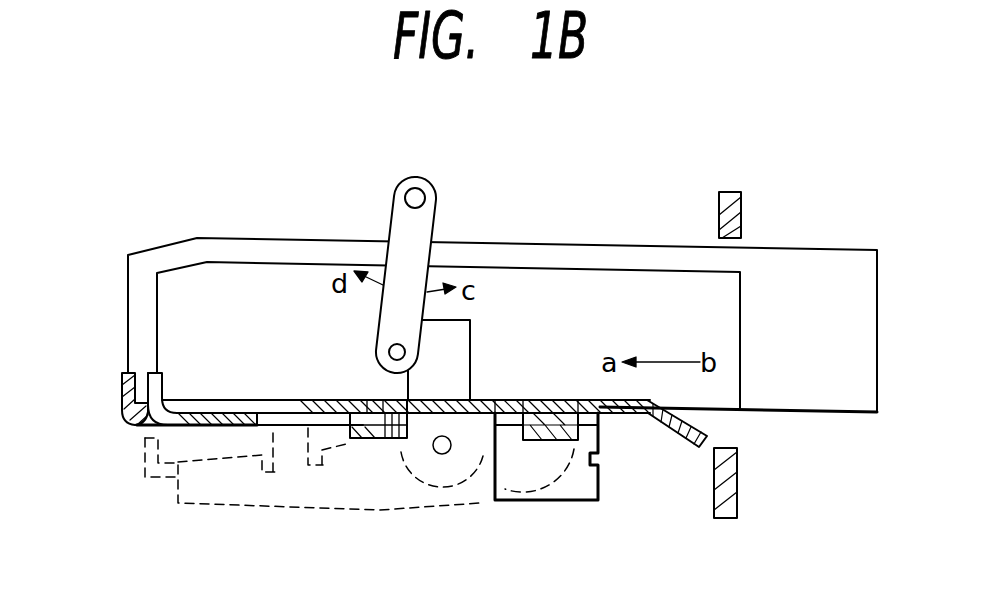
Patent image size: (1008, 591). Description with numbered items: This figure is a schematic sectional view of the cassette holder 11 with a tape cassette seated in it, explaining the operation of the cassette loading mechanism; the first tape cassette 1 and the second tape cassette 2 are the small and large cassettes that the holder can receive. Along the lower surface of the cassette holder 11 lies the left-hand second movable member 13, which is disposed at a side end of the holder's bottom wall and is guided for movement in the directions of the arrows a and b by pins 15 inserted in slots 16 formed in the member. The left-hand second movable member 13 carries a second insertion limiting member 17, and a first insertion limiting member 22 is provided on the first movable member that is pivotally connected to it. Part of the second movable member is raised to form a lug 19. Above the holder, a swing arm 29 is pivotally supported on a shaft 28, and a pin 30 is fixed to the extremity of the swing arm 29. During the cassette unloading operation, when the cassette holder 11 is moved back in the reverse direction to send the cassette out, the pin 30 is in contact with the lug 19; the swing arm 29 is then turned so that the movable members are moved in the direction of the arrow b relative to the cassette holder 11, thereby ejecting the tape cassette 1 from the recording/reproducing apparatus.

The first tape cassette 1 is at (609, 268).
The second tape cassette 2 is at (805, 262).
The cassette holder 11 is at (632, 420).
The left-hand second movable member 13 is at (212, 425).
The pins 15 is at (375, 440).
The slots 16 is at (323, 417).
The second insertion limiting member 17 is at (122, 392).
The lug 19 is at (470, 340).
The first insertion limiting member 22 is at (163, 383).
The shaft 28 is at (412, 190).
The swing arm 29 is at (390, 215).
The pin 30 is at (382, 346).